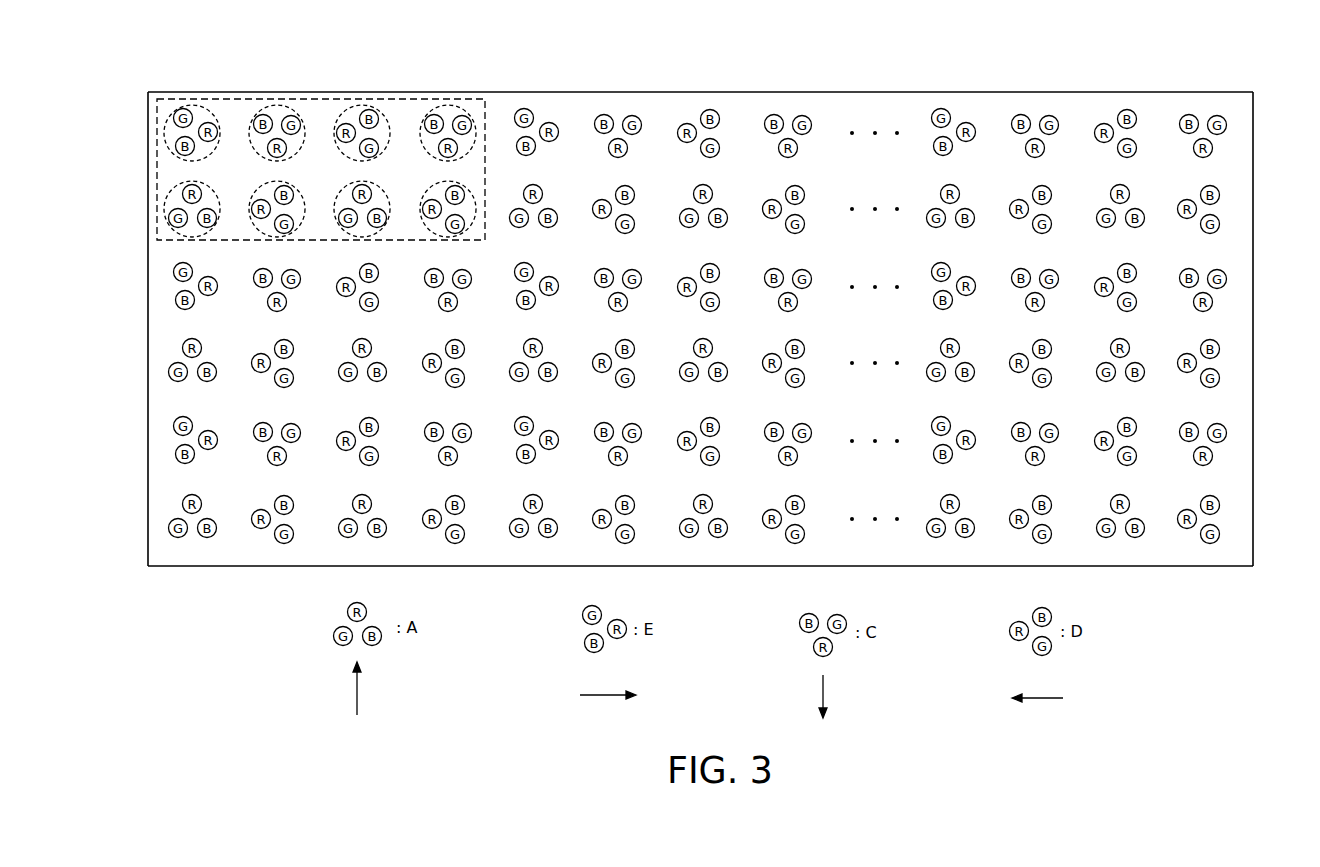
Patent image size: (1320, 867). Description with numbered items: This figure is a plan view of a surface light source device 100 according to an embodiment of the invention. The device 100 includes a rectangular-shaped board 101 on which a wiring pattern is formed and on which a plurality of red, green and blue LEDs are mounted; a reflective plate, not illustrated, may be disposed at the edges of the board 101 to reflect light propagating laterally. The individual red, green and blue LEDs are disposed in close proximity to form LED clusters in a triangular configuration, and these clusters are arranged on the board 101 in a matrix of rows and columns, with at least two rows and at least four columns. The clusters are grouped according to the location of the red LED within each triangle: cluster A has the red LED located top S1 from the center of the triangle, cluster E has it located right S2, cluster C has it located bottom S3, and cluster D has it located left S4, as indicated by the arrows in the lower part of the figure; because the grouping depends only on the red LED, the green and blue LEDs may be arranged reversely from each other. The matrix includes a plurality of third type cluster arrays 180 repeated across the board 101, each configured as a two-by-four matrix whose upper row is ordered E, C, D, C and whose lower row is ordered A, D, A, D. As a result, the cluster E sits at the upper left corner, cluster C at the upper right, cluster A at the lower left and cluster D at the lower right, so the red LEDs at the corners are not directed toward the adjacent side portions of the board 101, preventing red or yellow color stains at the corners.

The surface light source device 100 is at (283, 37).
The board 101 is at (659, 108).
The third type cluster array 180 is at (340, 98).
The top S1 is at (865, 92).
The right S2 is at (1253, 375).
The bottom S3 is at (1197, 568).
The left S4 is at (148, 352).
The cluster A is at (168, 195).
The cluster C is at (302, 117).
The cluster D is at (385, 117).
The cluster E is at (218, 115).